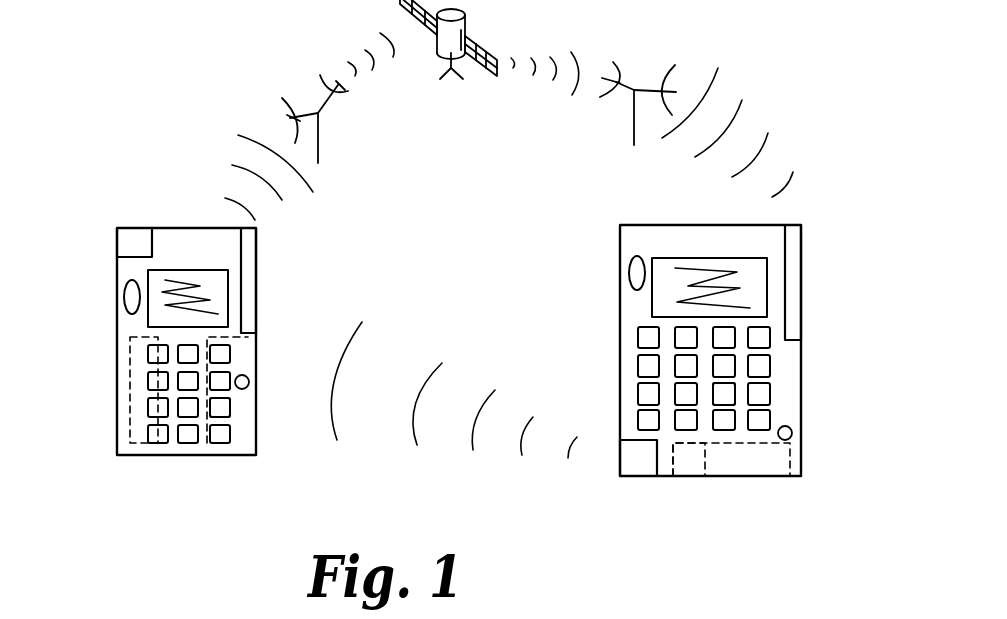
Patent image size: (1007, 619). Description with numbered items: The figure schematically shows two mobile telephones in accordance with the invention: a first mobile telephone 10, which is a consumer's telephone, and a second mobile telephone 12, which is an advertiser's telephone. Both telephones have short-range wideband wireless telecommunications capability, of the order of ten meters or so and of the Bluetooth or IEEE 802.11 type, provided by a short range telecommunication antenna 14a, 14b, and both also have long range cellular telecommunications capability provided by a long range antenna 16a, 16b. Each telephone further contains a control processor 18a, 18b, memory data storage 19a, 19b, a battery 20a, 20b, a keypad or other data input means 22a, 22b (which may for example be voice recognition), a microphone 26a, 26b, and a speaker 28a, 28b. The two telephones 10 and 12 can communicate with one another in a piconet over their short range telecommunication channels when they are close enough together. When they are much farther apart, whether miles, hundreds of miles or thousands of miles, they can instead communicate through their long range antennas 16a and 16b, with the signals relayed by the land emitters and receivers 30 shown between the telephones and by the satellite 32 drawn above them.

The first mobile telephone 10 is at (133, 194).
The second mobile telephone 12 is at (720, 502).
The short range telecommunication antenna 14a is at (127, 245).
The short range telecommunication antenna 14b is at (637, 458).
The long range antenna 16a is at (248, 270).
The long range antenna 16b is at (795, 265).
The control processor 18a is at (132, 407).
The control processor 18b is at (648, 362).
The memory data storage 19a is at (130, 350).
The memory data storage 19b is at (692, 463).
The battery 20a is at (240, 355).
The battery 20b is at (758, 465).
The keypad 22a is at (231, 407).
The keypad 22b is at (744, 397).
The microphone 26a is at (249, 383).
The microphone 26b is at (792, 434).
The speaker 28a is at (124, 297).
The speaker 28b is at (629, 272).
The land emitters and receivers 30 is at (318, 152).
The satellite 32 is at (453, 84).